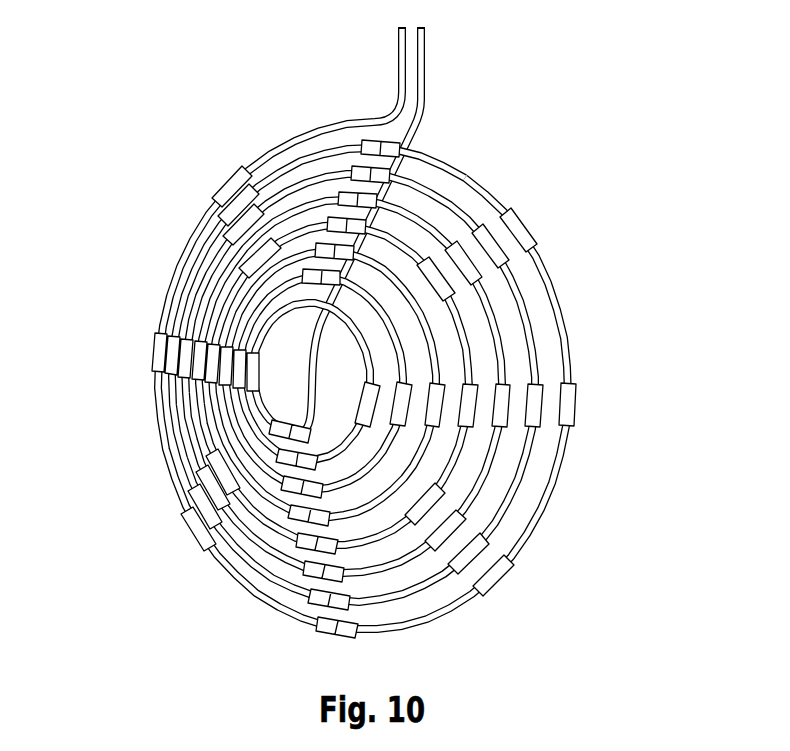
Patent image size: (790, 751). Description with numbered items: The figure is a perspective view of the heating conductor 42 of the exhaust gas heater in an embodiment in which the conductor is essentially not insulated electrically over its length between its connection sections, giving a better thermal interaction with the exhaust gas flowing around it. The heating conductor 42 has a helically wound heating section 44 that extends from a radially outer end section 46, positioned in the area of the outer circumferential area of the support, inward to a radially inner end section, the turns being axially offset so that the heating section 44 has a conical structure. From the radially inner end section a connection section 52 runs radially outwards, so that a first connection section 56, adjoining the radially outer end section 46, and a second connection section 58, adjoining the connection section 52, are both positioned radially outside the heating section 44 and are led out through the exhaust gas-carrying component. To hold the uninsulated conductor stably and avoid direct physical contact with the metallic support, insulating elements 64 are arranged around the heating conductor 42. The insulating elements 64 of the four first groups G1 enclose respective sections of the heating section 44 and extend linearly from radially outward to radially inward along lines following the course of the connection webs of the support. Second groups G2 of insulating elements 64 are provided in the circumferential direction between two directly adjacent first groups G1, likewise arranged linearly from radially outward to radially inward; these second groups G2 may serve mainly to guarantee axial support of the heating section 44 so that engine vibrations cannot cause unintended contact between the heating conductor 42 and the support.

The heating conductor 42 is at (625, 275).
The heating section 44 is at (521, 487).
The radially outer end section 46 is at (294, 136).
The connection section 52 is at (421, 120).
The first connection section 56 is at (396, 52).
The second connection section 58 is at (427, 57).
The insulating element 64 is at (204, 543).
The first group of insulating elements G1 is at (675, 395).
The second group of insulating elements G2 is at (545, 640).